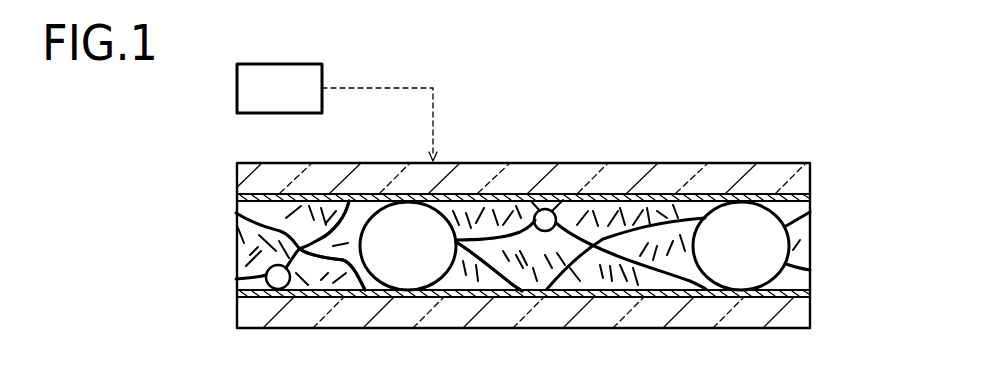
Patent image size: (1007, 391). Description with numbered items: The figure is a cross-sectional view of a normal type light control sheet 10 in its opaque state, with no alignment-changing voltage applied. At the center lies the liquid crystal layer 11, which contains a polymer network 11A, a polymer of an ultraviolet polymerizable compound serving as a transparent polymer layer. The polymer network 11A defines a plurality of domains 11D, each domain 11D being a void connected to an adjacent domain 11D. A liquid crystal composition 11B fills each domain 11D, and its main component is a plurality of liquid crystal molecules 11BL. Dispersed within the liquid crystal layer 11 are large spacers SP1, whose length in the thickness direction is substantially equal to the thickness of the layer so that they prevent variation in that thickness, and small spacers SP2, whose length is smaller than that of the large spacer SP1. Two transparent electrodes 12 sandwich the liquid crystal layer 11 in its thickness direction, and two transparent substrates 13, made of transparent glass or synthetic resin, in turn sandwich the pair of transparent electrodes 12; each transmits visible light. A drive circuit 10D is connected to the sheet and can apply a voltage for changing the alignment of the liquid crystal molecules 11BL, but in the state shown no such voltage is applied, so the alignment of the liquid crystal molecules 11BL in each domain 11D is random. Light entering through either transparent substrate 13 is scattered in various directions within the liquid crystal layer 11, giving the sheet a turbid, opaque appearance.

The normal type light control sheet 10 is at (895, 151).
The drive circuit 10D is at (237, 89).
The liquid crystal layer 11 is at (237, 255).
The polymer network 11A is at (353, 207).
The liquid crystal composition 11B is at (570, 283).
The liquid crystal molecules 11BL is at (480, 273).
The domain 11D is at (350, 277).
The transparent electrode 12 is at (810, 197).
The transparent substrate 13 is at (237, 175).
The large spacer SP1 is at (747, 215).
The small spacer SP2 is at (550, 209).